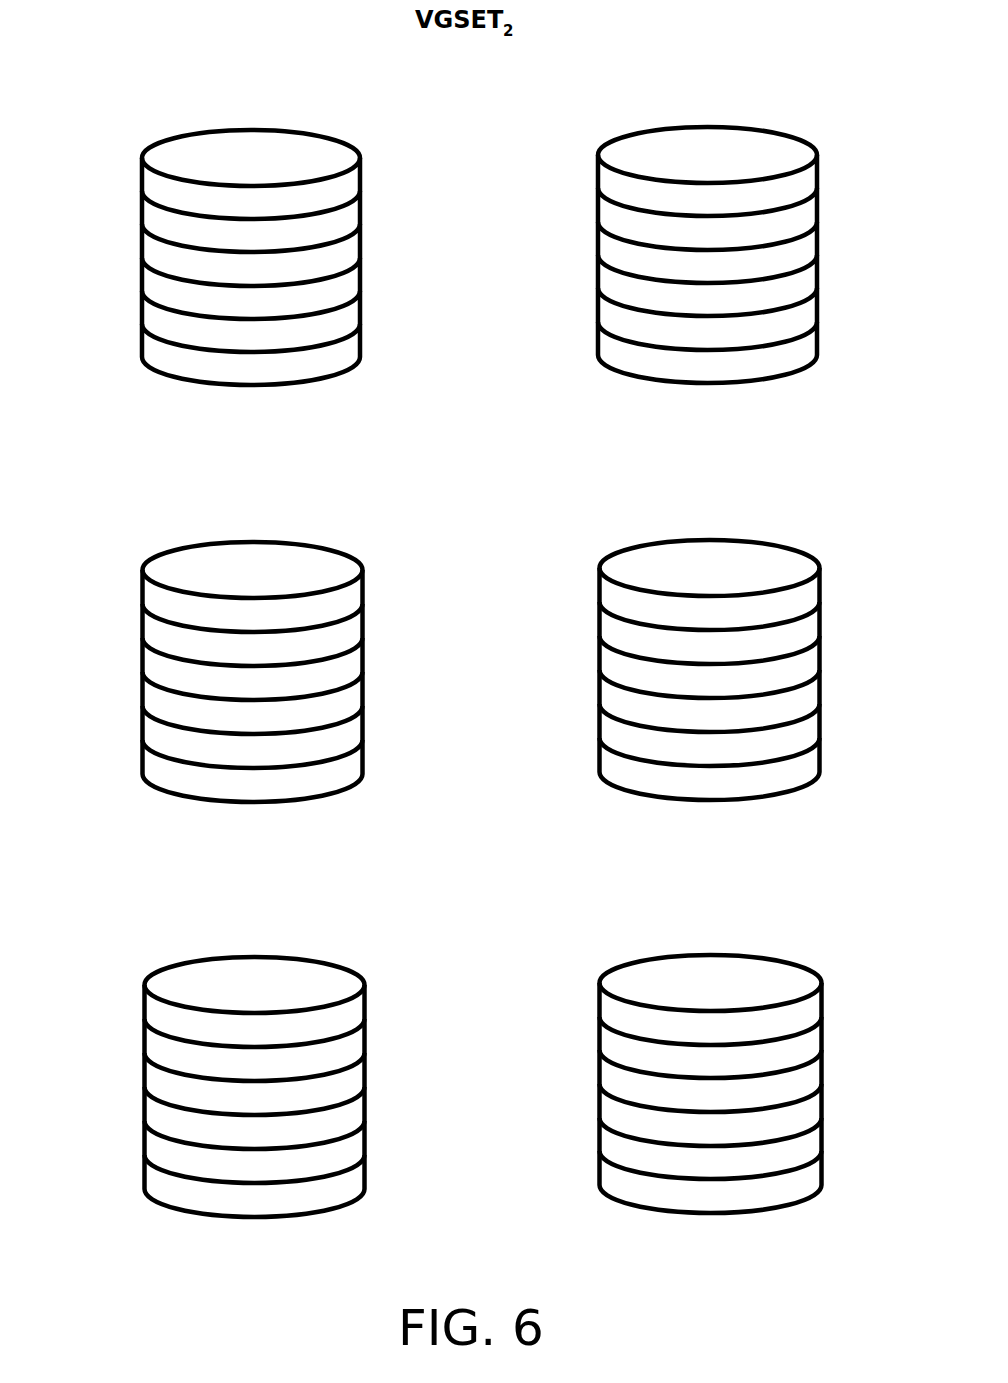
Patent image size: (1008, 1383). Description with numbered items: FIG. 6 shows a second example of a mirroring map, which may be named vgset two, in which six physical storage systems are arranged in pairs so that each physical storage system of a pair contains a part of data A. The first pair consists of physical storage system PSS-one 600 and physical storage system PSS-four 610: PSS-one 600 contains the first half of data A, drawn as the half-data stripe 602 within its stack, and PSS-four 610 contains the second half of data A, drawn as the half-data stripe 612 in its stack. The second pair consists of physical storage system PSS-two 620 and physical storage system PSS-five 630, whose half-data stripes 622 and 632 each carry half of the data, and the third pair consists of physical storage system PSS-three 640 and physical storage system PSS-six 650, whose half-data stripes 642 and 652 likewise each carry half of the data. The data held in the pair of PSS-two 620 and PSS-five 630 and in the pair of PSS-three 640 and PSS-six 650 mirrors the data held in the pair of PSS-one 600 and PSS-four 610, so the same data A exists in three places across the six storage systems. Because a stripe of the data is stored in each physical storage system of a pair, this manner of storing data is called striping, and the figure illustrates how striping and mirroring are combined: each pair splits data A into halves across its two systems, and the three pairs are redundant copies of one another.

The PSS-1 600 is at (332, 152).
The storage segment A/2 of PSS-1 602 is at (148, 220).
The PSS-4 610 is at (782, 148).
The storage segment A/2 of PSS-4 612 is at (605, 218).
The PSS-2 620 is at (333, 567).
The storage segment A/2 of PSS-2 622 is at (150, 633).
The PSS-5 630 is at (787, 565).
The storage segment A/2 of PSS-5 632 is at (608, 632).
The PSS-3 640 is at (335, 982).
The storage segment A/2 of PSS-3 642 is at (150, 1048).
The PSS-6 650 is at (788, 980).
The storage segment A/2 of PSS-6 652 is at (608, 1047).